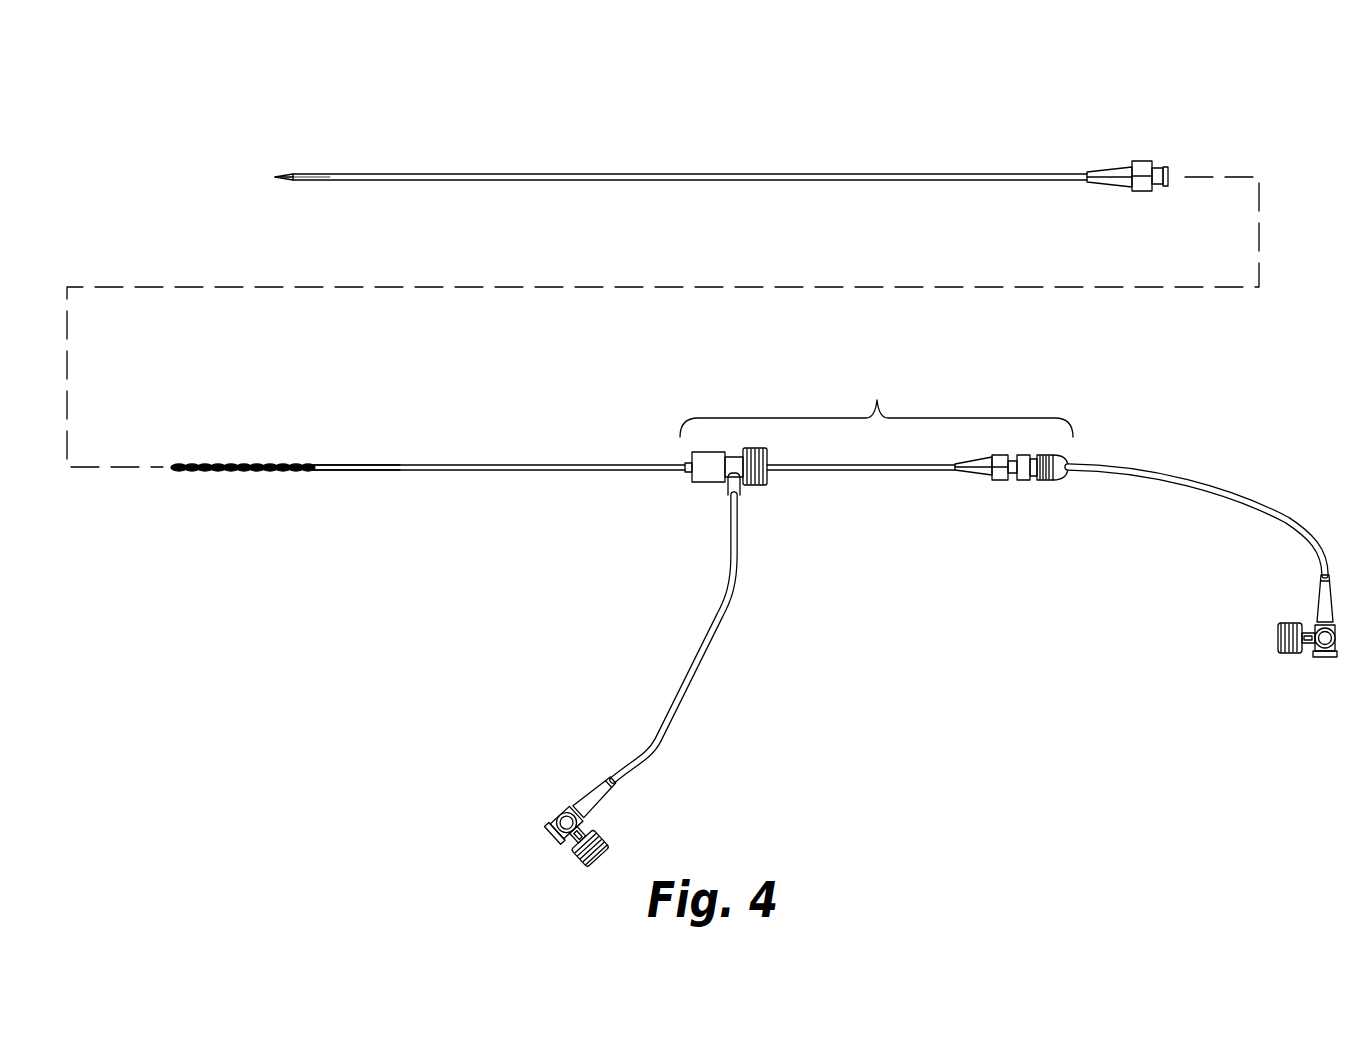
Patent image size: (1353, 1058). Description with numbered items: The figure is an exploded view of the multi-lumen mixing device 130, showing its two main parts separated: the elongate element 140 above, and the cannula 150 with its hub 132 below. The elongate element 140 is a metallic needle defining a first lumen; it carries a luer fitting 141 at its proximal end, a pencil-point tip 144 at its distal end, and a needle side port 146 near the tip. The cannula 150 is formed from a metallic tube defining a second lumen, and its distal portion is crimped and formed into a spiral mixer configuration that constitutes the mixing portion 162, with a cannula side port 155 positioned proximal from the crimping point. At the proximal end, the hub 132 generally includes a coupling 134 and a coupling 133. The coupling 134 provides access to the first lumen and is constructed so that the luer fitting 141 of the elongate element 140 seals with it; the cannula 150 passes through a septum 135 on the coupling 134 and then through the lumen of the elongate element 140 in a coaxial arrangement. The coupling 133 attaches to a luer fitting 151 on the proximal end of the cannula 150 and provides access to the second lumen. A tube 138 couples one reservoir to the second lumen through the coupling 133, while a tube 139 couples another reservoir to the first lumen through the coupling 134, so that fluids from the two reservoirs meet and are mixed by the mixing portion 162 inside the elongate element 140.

The multi-lumen mixing device 130 is at (754, 619).
The hub 132 is at (895, 467).
The coupling 133 is at (1055, 482).
The coupling 134 is at (698, 485).
The septum 135 is at (768, 480).
The tube 138 is at (1213, 478).
The tube 139 is at (688, 678).
The elongate element 140 is at (696, 129).
The luer fitting 141 is at (1160, 168).
The tip 144 is at (275, 177).
The needle side port 146 is at (313, 177).
The cannula 150 is at (634, 422).
The luer fitting 151 is at (1000, 482).
The cannula side port 155 is at (320, 464).
The mixing portion 162 is at (230, 472).